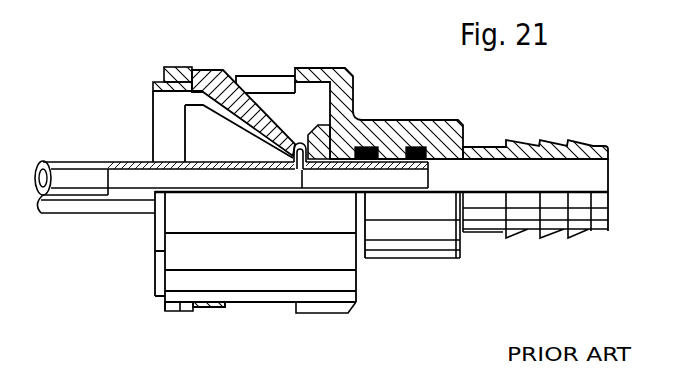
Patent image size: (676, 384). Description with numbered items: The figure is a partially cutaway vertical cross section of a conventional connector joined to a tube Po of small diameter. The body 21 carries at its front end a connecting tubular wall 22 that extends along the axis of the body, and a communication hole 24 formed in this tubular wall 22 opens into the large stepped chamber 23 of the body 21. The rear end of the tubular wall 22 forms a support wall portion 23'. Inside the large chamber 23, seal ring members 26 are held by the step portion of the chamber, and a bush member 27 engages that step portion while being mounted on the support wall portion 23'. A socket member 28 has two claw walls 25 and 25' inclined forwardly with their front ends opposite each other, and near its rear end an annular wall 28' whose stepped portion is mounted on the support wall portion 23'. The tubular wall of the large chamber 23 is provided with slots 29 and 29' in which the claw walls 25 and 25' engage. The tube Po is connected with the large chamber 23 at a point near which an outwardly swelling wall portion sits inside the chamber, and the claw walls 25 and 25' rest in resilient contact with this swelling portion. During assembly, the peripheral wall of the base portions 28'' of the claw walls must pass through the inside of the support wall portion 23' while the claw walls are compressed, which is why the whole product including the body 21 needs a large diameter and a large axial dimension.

The body 21 is at (405, 247).
The connecting tubular wall 22 is at (537, 232).
The large stepped chamber 23 is at (265, 54).
The support wall portion 23' is at (148, 209).
The communication hole 24 is at (530, 175).
The claw wall 25 is at (231, 160).
The claw wall 25' is at (203, 148).
The seal ring members 26 is at (378, 150).
The bush member 27 is at (327, 137).
The socket member 28 is at (243, 85).
The annular wall 28' is at (146, 92).
The base portions of the claw walls 28'' is at (203, 194).
The slot 29 is at (373, 87).
The slot 29' is at (318, 338).
The tube Po is at (83, 216).